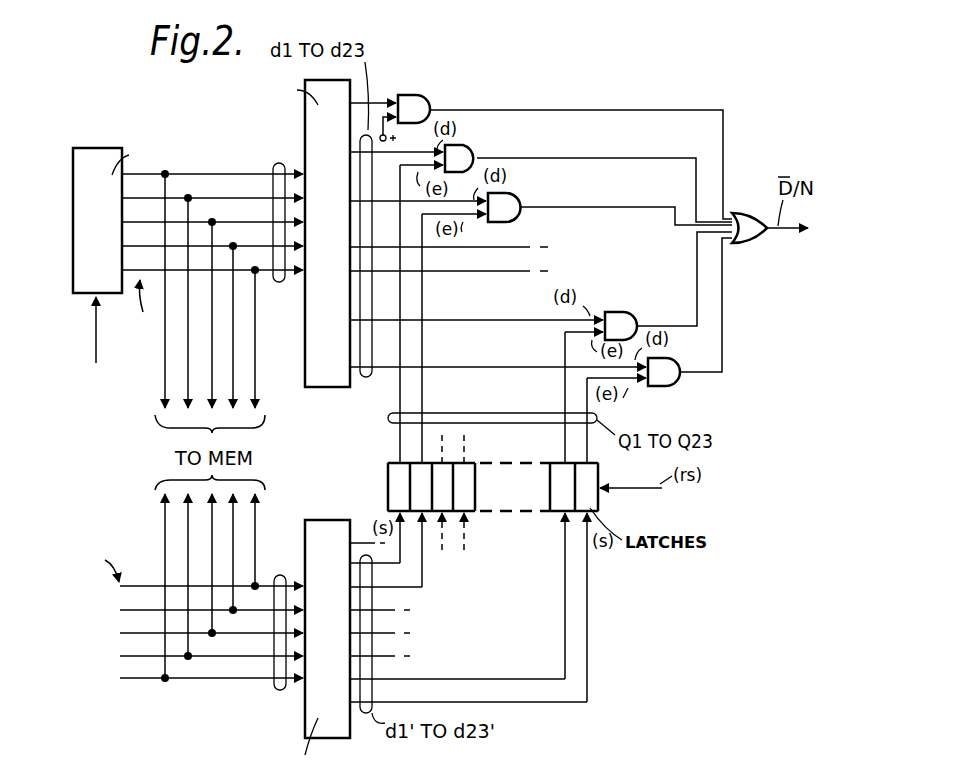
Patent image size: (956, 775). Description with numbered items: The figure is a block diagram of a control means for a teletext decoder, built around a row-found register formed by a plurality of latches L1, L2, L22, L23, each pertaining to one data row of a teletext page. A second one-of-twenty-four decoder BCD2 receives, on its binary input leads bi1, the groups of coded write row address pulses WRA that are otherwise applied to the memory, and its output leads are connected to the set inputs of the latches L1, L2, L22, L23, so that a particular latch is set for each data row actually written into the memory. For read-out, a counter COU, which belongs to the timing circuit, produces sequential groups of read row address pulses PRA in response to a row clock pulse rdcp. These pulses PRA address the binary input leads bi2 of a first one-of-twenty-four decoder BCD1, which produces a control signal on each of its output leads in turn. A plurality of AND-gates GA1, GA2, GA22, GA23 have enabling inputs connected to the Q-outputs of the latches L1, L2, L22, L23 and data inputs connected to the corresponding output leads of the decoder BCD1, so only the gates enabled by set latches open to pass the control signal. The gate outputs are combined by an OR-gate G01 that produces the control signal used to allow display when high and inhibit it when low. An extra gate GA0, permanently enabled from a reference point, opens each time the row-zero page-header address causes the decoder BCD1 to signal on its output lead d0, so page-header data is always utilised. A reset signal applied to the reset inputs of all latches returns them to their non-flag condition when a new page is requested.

The counter COU is at (108, 157).
The 1-of-24 decoder BCD1 is at (327, 378).
The second 1-of-24 decoder BCD2 is at (338, 527).
The binary input leads bi1 is at (278, 690).
The binary input leads bi2 is at (278, 163).
The extra gate GA0 is at (416, 102).
The AND-gate GA1 is at (465, 152).
The AND-gate GA2 is at (508, 200).
The AND-gate GA22 is at (618, 312).
The AND-gate GA23 is at (665, 380).
The OR-gate G01 is at (745, 247).
The latch L1 is at (395, 488).
The latch L2 is at (415, 466).
The latch L22 is at (562, 466).
The latch L23 is at (588, 497).
The output lead d0 is at (378, 98).
The read row address information PRA is at (131, 310).
The row clock pulse rdcp is at (94, 350).
The write row address information WRA is at (88, 563).